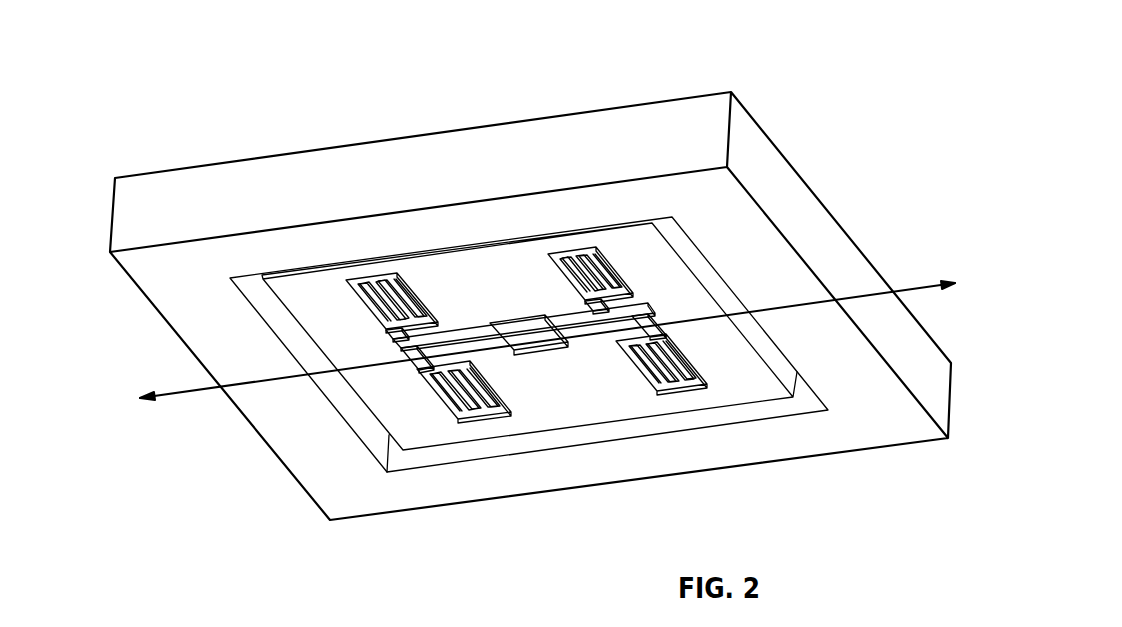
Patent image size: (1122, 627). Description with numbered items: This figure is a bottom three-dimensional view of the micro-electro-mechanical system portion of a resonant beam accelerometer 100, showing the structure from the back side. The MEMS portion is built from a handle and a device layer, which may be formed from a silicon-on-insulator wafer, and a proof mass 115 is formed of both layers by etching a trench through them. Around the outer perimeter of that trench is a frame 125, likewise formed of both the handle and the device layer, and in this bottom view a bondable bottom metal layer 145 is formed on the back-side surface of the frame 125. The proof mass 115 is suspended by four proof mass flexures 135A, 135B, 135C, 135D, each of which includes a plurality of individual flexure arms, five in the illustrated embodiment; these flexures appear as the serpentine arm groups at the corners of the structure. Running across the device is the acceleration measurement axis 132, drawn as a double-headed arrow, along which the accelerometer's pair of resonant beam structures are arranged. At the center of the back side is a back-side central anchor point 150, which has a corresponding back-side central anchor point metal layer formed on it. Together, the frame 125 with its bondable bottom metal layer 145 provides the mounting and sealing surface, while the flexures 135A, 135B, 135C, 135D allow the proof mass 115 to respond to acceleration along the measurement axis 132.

The resonant beam accelerometer 100 is at (663, 52).
The frame 125 is at (218, 202).
The bondable bottom metal layer 145 is at (474, 228).
The proof mass 115 is at (672, 272).
The acceleration measurement axis 132 is at (906, 280).
The proof mass flexure 135A is at (455, 390).
The proof mass flexure 135B is at (664, 366).
The proof mass flexure 135C is at (378, 304).
The proof mass flexure 135D is at (582, 287).
The back-side central anchor point 150 is at (528, 352).